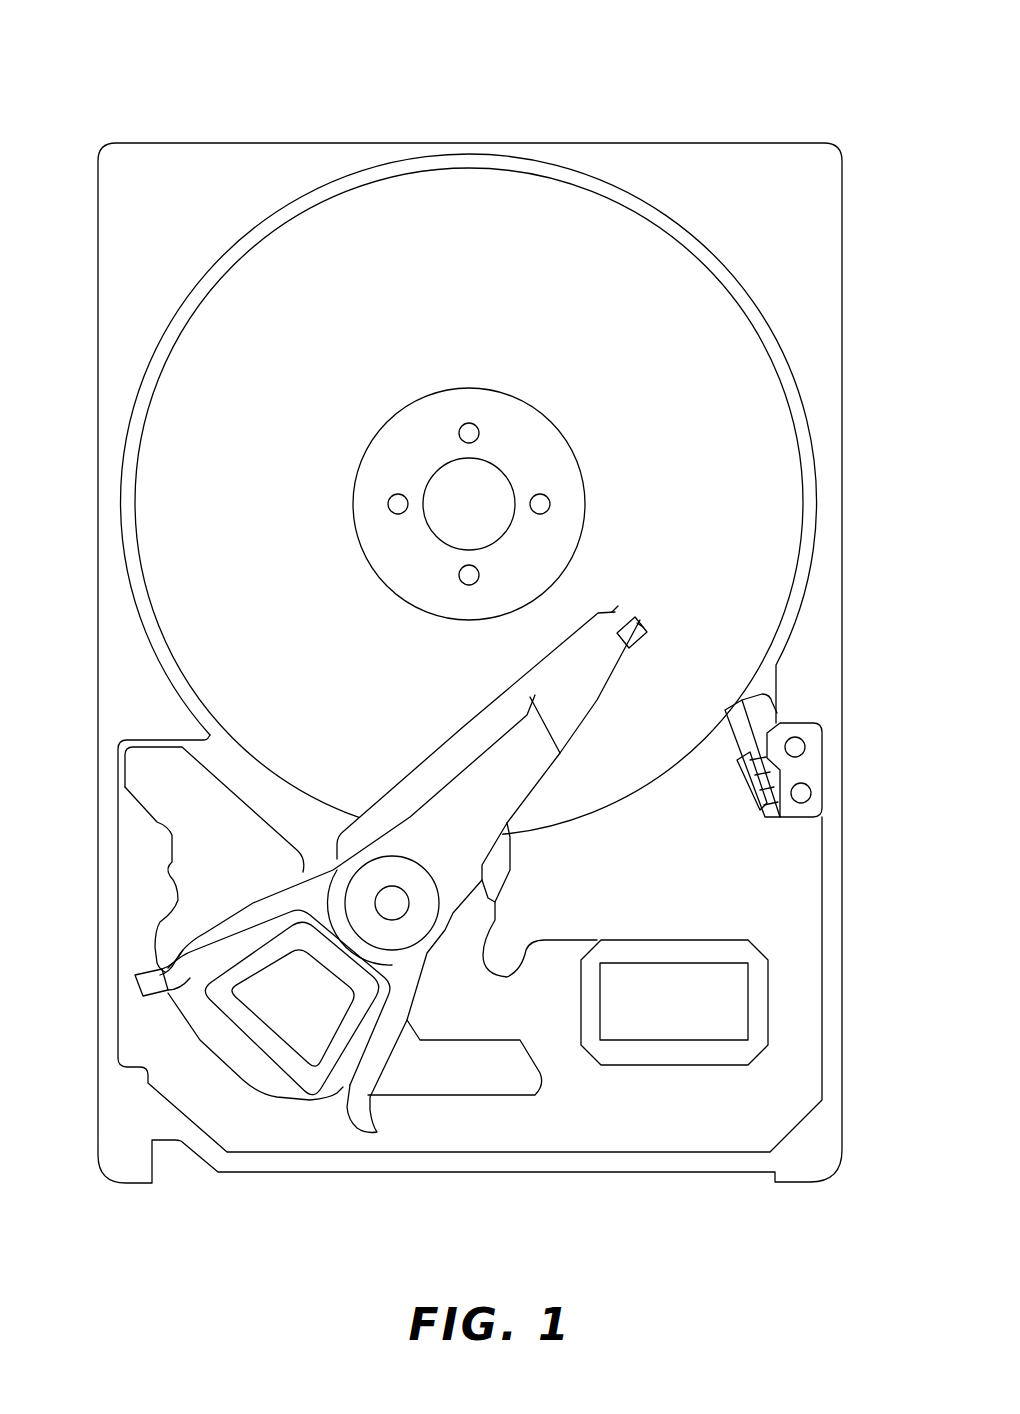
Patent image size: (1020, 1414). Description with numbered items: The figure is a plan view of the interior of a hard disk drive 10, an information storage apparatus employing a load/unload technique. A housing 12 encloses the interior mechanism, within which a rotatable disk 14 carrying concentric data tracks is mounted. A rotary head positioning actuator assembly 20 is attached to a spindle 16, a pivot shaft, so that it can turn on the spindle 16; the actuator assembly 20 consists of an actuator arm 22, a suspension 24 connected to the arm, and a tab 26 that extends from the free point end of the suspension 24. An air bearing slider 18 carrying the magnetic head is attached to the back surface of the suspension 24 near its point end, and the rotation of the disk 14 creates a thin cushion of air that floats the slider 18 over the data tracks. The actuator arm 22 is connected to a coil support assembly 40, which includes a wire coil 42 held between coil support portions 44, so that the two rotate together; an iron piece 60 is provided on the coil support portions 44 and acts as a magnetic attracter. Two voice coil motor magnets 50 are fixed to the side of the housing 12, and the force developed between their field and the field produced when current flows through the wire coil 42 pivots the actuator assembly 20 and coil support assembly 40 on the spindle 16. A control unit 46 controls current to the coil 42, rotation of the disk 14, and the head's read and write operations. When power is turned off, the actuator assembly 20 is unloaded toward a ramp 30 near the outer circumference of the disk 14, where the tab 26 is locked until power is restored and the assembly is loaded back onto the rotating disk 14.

The hard disk drive 10 is at (825, 101).
The housing 12 is at (845, 258).
The rotatable disk 14 is at (710, 312).
The spindle 16 is at (393, 904).
The air bearing slider 18 is at (640, 640).
The actuator assembly 20 is at (468, 725).
The actuator arm 22 is at (488, 805).
The suspension 24 is at (593, 698).
The tab 26 is at (640, 618).
The ramp 30 is at (760, 713).
The coil support assembly 40 is at (279, 1102).
The wire coil 42 is at (278, 1057).
The coil support portions 44 is at (357, 1113).
The control unit 46 is at (658, 1012).
The voice coil motor magnets 50 is at (451, 1088).
The iron piece 60 is at (143, 981).